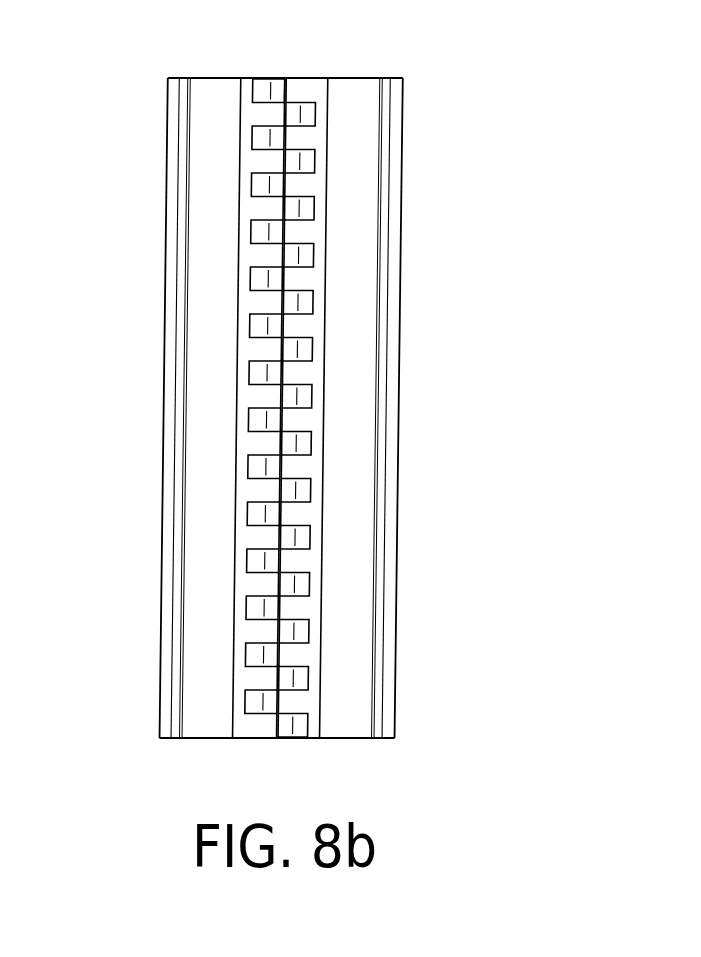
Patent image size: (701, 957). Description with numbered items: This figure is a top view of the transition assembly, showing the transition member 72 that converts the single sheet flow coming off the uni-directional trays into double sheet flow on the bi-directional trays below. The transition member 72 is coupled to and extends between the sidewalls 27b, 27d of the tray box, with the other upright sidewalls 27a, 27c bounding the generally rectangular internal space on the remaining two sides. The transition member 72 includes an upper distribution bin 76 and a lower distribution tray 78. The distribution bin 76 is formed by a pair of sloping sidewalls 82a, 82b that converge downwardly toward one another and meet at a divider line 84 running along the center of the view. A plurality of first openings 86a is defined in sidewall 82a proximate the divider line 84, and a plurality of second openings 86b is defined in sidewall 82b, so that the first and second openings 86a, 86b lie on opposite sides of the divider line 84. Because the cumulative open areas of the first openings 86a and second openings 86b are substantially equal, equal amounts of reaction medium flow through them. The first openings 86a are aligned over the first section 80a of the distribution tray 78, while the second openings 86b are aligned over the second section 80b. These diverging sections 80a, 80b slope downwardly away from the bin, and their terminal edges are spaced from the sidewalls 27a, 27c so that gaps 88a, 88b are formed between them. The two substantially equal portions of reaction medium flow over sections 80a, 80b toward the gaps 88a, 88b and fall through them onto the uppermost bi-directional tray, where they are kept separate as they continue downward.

The divider line 84 is at (282, 90).
The sidewall 27d is at (355, 78).
The sidewall 27b is at (205, 738).
The sidewall 27a is at (162, 531).
The sidewall 27c is at (398, 530).
The sloping sidewall 82a is at (262, 160).
The sloping sidewall 82b is at (303, 232).
The first openings 86a is at (262, 232).
The second openings 86b is at (303, 160).
The first section of distribution tray 80a is at (208, 422).
The second section of distribution tray 80b is at (352, 422).
The gap 88a is at (170, 477).
The gap 88b is at (390, 473).
The distribution bin 76 is at (234, 608).
The distribution tray 78 is at (352, 605).
The transition member 72 is at (345, 723).